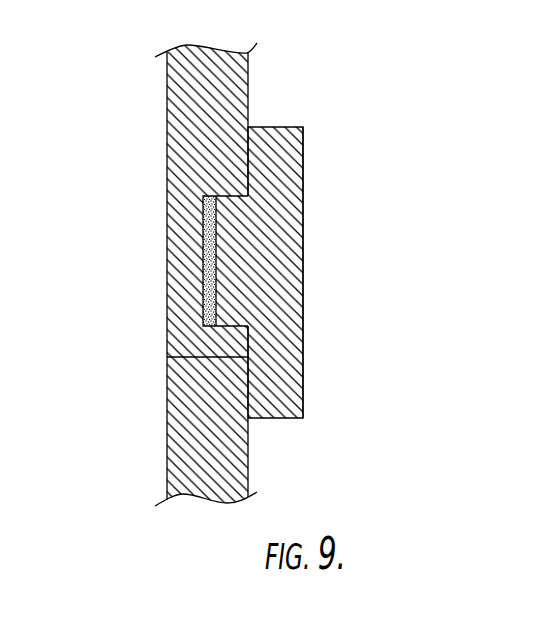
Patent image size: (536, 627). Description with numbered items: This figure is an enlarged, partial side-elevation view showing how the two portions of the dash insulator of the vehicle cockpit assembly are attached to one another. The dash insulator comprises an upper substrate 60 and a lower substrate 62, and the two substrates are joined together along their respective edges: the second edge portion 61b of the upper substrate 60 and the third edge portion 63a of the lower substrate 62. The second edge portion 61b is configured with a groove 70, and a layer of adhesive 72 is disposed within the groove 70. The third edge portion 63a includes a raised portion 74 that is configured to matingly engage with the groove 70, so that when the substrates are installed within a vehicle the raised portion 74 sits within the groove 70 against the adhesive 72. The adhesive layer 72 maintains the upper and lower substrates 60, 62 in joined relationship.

The upper substrate 60 is at (168, 90).
The second edge portion 61b is at (168, 263).
The lower substrate 62 is at (247, 487).
The third edge portion 63a is at (303, 193).
The groove 70 is at (203, 196).
The layer of adhesive 72 is at (205, 305).
The raised portion 74 is at (248, 257).